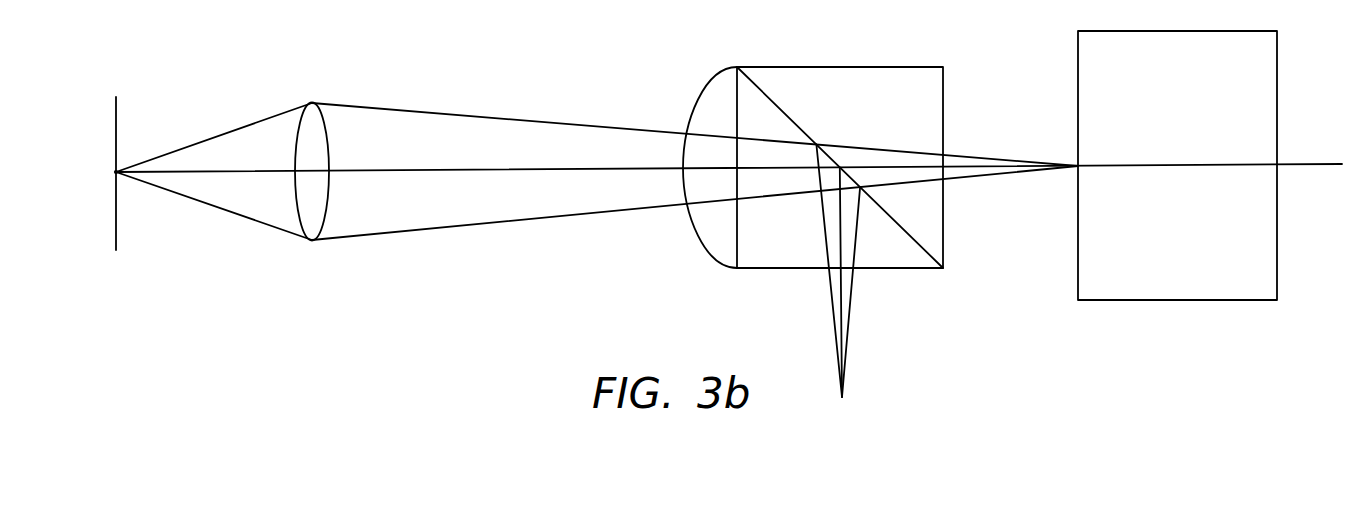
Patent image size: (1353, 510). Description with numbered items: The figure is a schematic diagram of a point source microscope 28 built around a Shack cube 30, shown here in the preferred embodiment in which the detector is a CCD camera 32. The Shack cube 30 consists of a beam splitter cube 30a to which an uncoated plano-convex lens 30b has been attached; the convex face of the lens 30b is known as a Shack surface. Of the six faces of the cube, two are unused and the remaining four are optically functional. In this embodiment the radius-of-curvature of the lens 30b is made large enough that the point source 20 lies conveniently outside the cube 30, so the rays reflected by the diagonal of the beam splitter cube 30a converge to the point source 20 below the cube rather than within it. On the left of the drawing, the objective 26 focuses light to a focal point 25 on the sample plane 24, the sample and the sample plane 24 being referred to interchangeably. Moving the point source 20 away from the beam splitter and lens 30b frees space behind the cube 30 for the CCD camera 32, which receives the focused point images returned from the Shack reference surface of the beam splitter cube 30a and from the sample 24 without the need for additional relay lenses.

The point source 20 is at (842, 397).
The sample plane 24 is at (116, 110).
The focal point 25 is at (116, 173).
The objective 26 is at (318, 122).
The point source microscope 28 is at (1213, 202).
The Shack cube 30 is at (802, 158).
The beam splitter cube 30a is at (870, 82).
The plano-convex lens 30b is at (703, 221).
The CCD camera 32 is at (1187, 300).